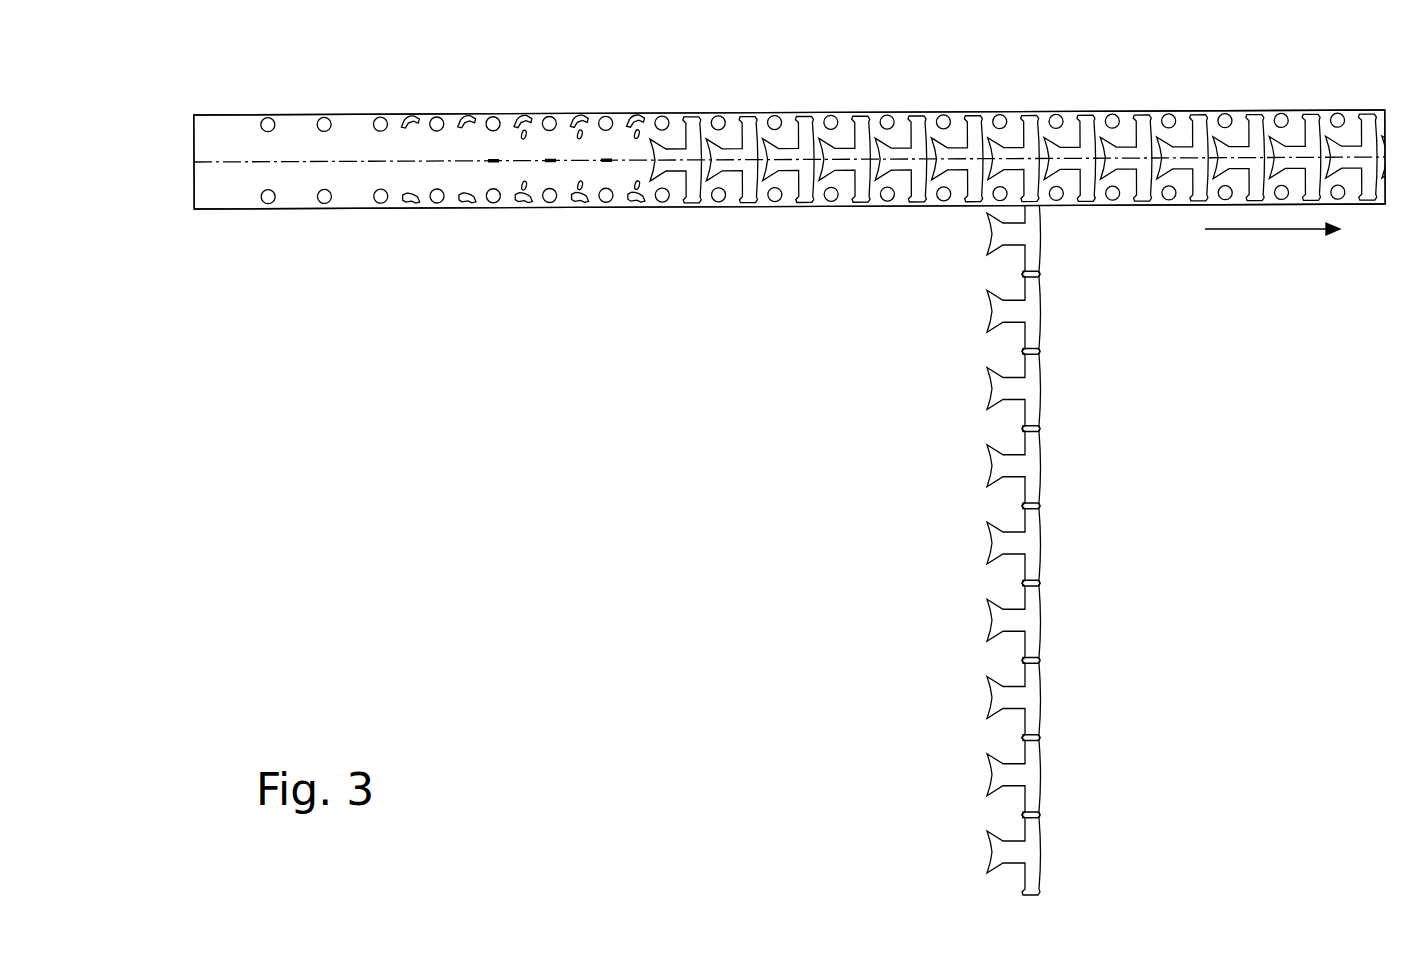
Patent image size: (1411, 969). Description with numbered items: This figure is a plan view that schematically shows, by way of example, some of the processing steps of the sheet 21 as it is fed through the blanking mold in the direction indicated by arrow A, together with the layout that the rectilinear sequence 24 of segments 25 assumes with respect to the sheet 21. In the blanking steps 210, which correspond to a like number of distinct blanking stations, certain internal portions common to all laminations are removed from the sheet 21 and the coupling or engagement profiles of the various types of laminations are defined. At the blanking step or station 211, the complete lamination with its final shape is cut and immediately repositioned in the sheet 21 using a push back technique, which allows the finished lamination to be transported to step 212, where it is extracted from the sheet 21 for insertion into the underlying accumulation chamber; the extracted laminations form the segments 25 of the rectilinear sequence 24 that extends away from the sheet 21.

The sheet 21 is at (802, 178).
The blanking steps 210 is at (645, 210).
The blanking step or station 211 is at (1030, 158).
The step 212 is at (1040, 112).
The rectilinear sequence 24 is at (1081, 544).
The segments 25 is at (1003, 465).
The arrow A is at (1268, 229).